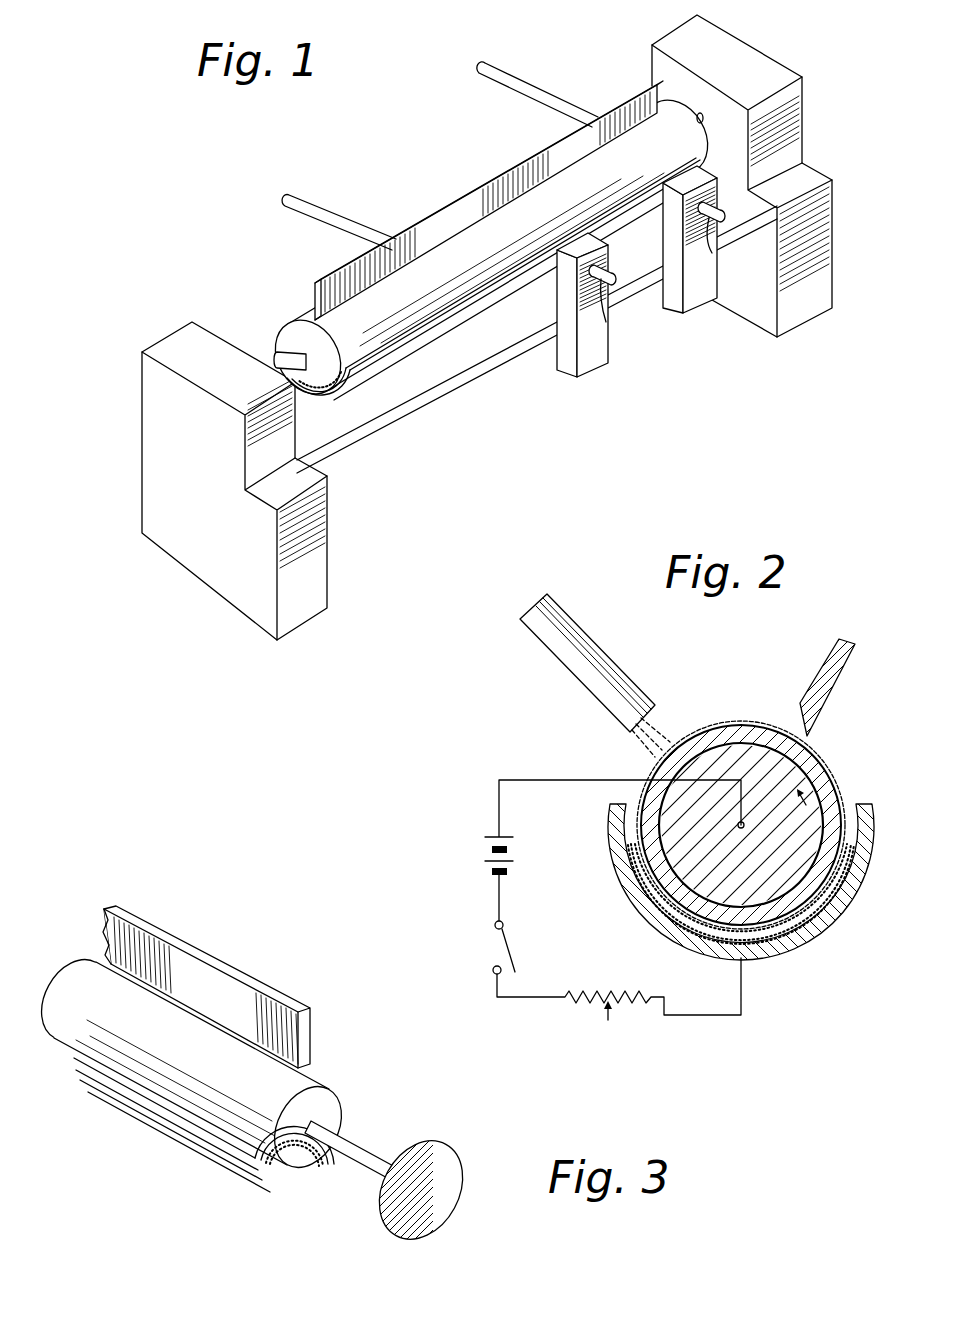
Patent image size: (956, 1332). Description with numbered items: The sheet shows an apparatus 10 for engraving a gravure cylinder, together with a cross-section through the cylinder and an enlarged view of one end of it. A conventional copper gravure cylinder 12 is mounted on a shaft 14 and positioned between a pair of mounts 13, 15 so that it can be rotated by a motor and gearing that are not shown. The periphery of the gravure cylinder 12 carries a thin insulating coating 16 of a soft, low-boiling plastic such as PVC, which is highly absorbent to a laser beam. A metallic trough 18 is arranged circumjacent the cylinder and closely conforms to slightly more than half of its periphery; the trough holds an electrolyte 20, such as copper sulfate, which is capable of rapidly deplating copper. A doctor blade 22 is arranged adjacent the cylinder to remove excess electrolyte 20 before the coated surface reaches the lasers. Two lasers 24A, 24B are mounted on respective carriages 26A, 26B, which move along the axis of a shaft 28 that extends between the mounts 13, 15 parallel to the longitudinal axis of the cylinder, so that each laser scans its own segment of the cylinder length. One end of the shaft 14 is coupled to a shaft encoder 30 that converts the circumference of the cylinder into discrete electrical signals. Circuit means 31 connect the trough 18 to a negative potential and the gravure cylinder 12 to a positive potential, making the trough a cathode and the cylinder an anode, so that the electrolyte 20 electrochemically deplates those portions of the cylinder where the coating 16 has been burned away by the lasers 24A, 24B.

In FIG. 1, the apparatus 10 is at (448, 156).
In FIG. 1, the gravure cylinder 12 is at (289, 313).
In FIG. 2, the gravure cylinder 12 is at (826, 786).
In FIG. 3, the gravure cylinder 12 is at (74, 976).
In FIG. 1, the mount 13 is at (153, 404).
In FIG. 1, the shaft 14 is at (274, 344).
In FIG. 3, the shaft 14 is at (373, 1161).
In FIG. 1, the mount 15 is at (750, 58).
In FIG. 1, the insulating coating 16 is at (395, 320).
In FIG. 2, the insulating coating 16 is at (737, 721).
In FIG. 1, the metallic trough 18 is at (385, 358).
In FIG. 2, the metallic trough 18 is at (637, 893).
In FIG. 3, the metallic trough 18 is at (219, 1154).
In FIG. 1, the electrolyte 20 is at (318, 392).
In FIG. 2, the electrolyte 20 is at (809, 930).
In FIG. 3, the electrolyte 20 is at (295, 1190).
In FIG. 1, the doctor blade 22 is at (430, 212).
In FIG. 2, the doctor blade 22 is at (843, 684).
In FIG. 3, the doctor blade 22 is at (240, 962).
In FIG. 1, the laser 24A is at (606, 322).
In FIG. 2, the laser 24A is at (551, 646).
In FIG. 1, the laser 24B is at (712, 253).
In FIG. 1, the carriage 26A is at (592, 364).
In FIG. 1, the carriage 26B is at (700, 296).
In FIG. 1, the shaft 28 is at (481, 377).
In FIG. 3, the shaft encoder 30 is at (423, 1226).
In FIG. 2, the circuit means 31 is at (463, 872).